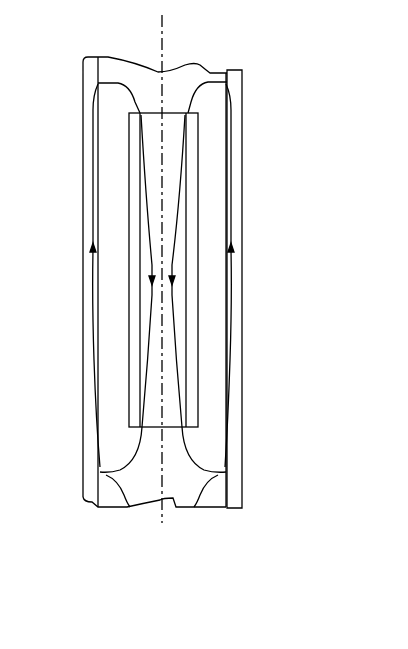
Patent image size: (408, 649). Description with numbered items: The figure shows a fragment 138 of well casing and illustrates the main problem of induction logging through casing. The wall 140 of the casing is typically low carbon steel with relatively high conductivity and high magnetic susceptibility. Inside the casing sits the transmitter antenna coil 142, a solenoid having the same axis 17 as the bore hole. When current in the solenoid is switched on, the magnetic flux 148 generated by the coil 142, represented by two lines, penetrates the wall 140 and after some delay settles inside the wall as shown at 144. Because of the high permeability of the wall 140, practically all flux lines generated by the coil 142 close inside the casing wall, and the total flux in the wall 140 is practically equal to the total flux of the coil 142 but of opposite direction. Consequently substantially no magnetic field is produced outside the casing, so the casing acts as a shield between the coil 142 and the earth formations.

The axis 17 is at (166, 40).
The fragment of the casing 138 is at (276, 126).
The wall of the casing 140 is at (245, 92).
The antenna coil 142 is at (198, 207).
The magnetic flux settled inside the wall 144 is at (93, 311).
The magnetic flux 148 is at (128, 508).